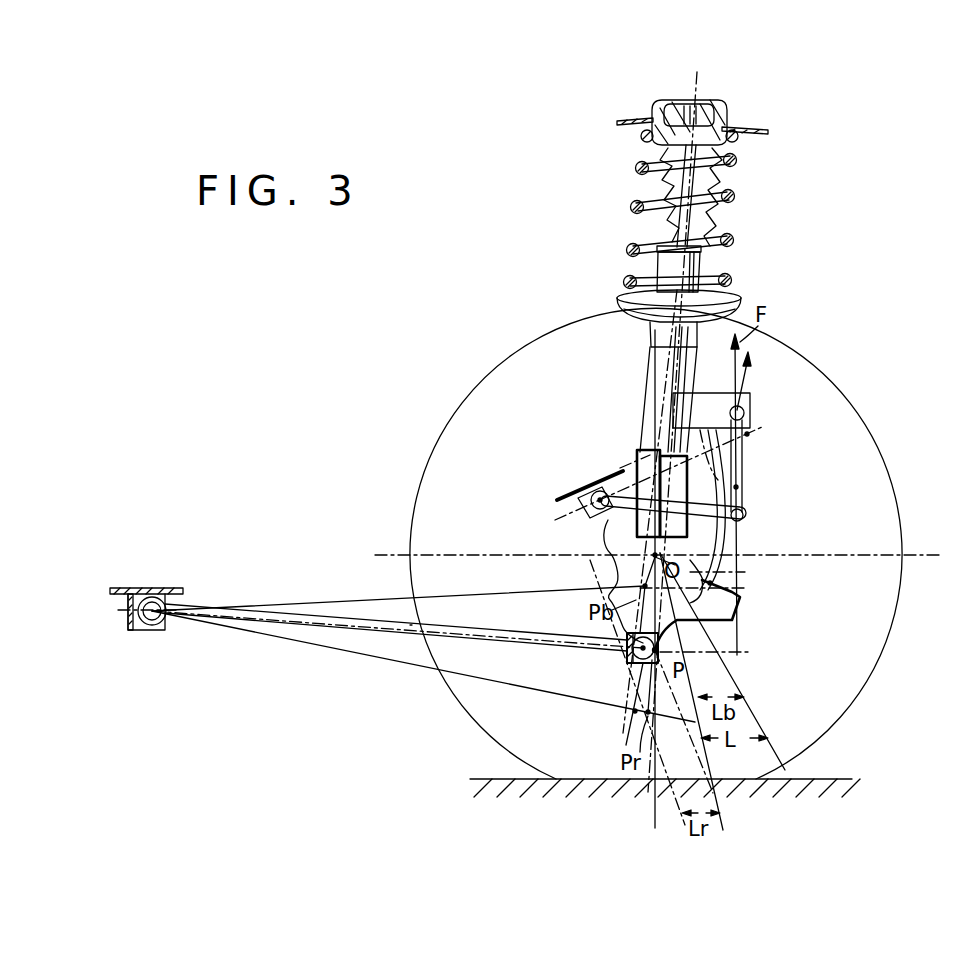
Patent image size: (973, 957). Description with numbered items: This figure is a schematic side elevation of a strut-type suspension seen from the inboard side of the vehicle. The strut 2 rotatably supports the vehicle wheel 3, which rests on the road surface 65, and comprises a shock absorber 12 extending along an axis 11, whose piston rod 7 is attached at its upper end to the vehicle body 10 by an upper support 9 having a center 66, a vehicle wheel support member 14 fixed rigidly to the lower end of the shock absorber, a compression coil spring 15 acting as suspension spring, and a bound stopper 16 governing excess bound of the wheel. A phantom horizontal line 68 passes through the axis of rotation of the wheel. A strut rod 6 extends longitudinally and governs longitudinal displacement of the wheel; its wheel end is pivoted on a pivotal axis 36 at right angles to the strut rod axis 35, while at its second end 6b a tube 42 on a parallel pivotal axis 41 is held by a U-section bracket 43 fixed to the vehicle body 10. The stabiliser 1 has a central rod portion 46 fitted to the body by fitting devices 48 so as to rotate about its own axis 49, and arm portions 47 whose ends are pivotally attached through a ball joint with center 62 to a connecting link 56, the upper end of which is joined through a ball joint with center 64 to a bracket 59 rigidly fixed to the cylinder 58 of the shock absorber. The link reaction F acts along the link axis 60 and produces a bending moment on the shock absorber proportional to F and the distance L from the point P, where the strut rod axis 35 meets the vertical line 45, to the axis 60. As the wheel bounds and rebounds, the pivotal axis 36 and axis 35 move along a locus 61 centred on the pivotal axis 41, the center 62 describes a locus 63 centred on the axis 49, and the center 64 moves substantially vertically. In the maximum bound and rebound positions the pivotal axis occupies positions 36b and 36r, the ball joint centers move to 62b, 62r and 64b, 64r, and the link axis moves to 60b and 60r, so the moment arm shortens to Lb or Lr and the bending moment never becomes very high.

The stabiliser 1 is at (628, 474).
The strut 2 is at (746, 290).
The vehicle wheel 3 is at (852, 396).
The strut rod 6 is at (404, 655).
The second end of the strut rod 6b is at (222, 626).
The piston rod 7 is at (678, 246).
The upper support 9 is at (722, 103).
The vehicle body 10 is at (161, 590).
The axis of the shock absorber 11 is at (690, 85).
The shock absorber 12 is at (640, 362).
The vehicle wheel support member 14 is at (741, 610).
The compression coil spring 15 is at (642, 175).
The bound stopper 16 is at (718, 178).
The axis of the strut rod 35 is at (310, 636).
The pivotal axis 36 is at (628, 663).
The bound position of the pivotal axis 36b is at (640, 586).
The rebound position of the pivotal axis 36r is at (633, 712).
The pivotal axis 41 is at (150, 598).
The tube 42 is at (153, 626).
The U-section bracket 43 is at (128, 628).
The vertical line 45 is at (652, 812).
The central rod portion 46 is at (590, 512).
The arm portion 47 is at (608, 540).
The fitting device 48 is at (562, 498).
The axis of the central rod portion 49 is at (592, 492).
The connecting link 56 is at (745, 466).
The cylinder 58 is at (648, 396).
The bracket 59 is at (720, 398).
The axis of the connecting link 60 is at (735, 548).
The bound position of the connecting link axis 60b is at (700, 440).
The rebound position of the connecting link axis 60r is at (722, 643).
The locus 61 is at (620, 740).
The center of the ball joint 62 is at (744, 515).
The bound position of the ball joint center 62b is at (748, 436).
The rebound position of the ball joint center 62r is at (712, 585).
The locus 63 is at (736, 571).
The center of the ball joint 64 is at (744, 413).
The bound position of the upper ball joint center 64b is at (766, 381).
The rebound position of the upper ball joint center 64r is at (739, 488).
The road surface 65 is at (835, 777).
The center of the upper support 66 is at (668, 118).
The phantom horizontal line 68 is at (926, 553).